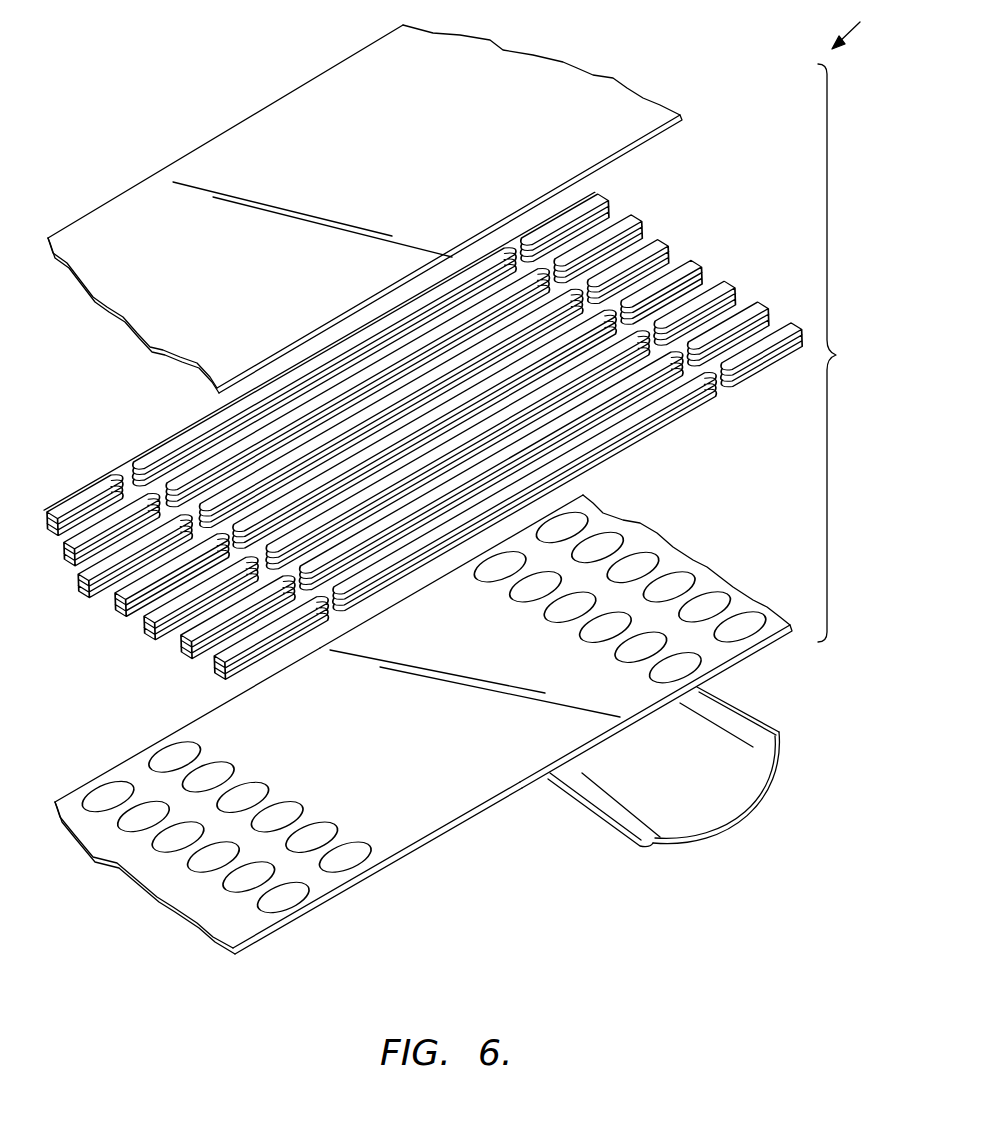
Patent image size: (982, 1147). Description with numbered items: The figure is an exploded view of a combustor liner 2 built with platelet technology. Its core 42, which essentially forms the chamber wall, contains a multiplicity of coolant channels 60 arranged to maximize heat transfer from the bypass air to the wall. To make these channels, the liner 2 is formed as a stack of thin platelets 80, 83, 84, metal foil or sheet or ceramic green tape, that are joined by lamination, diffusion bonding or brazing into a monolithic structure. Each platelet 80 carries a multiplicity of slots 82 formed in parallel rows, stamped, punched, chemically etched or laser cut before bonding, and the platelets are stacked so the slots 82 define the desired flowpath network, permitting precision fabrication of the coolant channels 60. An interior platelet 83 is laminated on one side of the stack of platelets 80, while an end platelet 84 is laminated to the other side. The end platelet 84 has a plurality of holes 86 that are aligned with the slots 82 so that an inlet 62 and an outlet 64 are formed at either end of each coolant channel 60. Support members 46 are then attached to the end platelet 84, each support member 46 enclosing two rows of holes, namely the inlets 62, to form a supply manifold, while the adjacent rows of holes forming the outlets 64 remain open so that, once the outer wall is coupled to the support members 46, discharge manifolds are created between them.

The combustor liner 2 is at (857, 26).
The core 42 is at (848, 353).
The support member 46 is at (657, 843).
The coolant channel 60 is at (411, 436).
The inlet 62 is at (690, 662).
The outlet 64 is at (112, 790).
The platelet 80 is at (49, 511).
The slot 82 is at (130, 621).
The interior platelet 83 is at (185, 183).
The end platelet 84 is at (565, 641).
The hole 86 is at (283, 801).